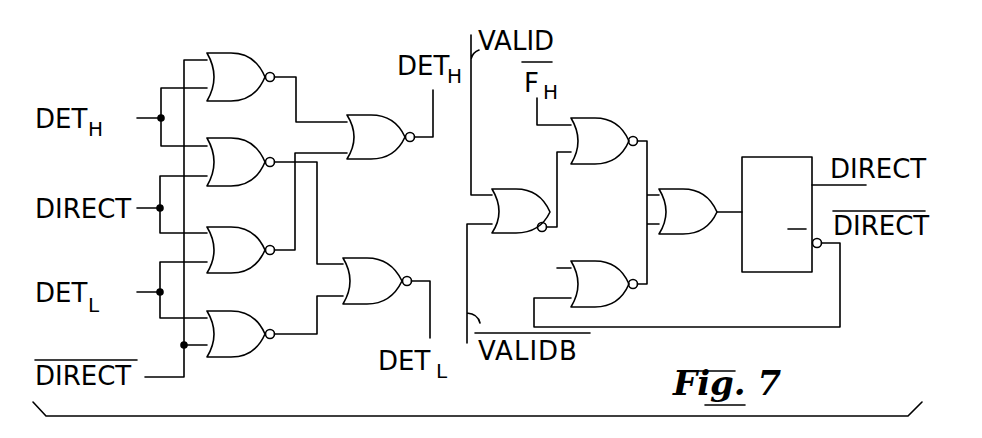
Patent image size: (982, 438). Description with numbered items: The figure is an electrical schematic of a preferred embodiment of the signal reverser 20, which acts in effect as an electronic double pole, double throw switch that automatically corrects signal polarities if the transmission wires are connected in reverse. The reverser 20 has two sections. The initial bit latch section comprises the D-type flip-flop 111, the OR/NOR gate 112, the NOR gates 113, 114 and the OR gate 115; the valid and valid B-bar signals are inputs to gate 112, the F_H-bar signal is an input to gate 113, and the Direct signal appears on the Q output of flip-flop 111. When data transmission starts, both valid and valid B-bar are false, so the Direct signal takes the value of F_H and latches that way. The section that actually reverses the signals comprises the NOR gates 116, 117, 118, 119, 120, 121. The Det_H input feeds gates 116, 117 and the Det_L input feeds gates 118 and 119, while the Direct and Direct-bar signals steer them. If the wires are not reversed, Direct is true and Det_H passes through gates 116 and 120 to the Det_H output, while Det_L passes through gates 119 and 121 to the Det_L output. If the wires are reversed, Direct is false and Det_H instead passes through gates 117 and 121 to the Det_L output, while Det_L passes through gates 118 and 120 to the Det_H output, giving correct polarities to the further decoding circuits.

The signal reverser 20 is at (702, 167).
The D-type flip-flop 111 is at (767, 157).
The OR/NOR gate 112 is at (531, 190).
The NOR gate 113 is at (598, 118).
The NOR gate 114 is at (623, 252).
The OR gate 115 is at (711, 189).
The NOR gate 116 is at (240, 53).
The NOR gate 117 is at (231, 138).
The NOR gate 118 is at (227, 227).
The NOR gate 119 is at (270, 305).
The NOR gate 120 is at (379, 115).
The NOR gate 121 is at (395, 245).